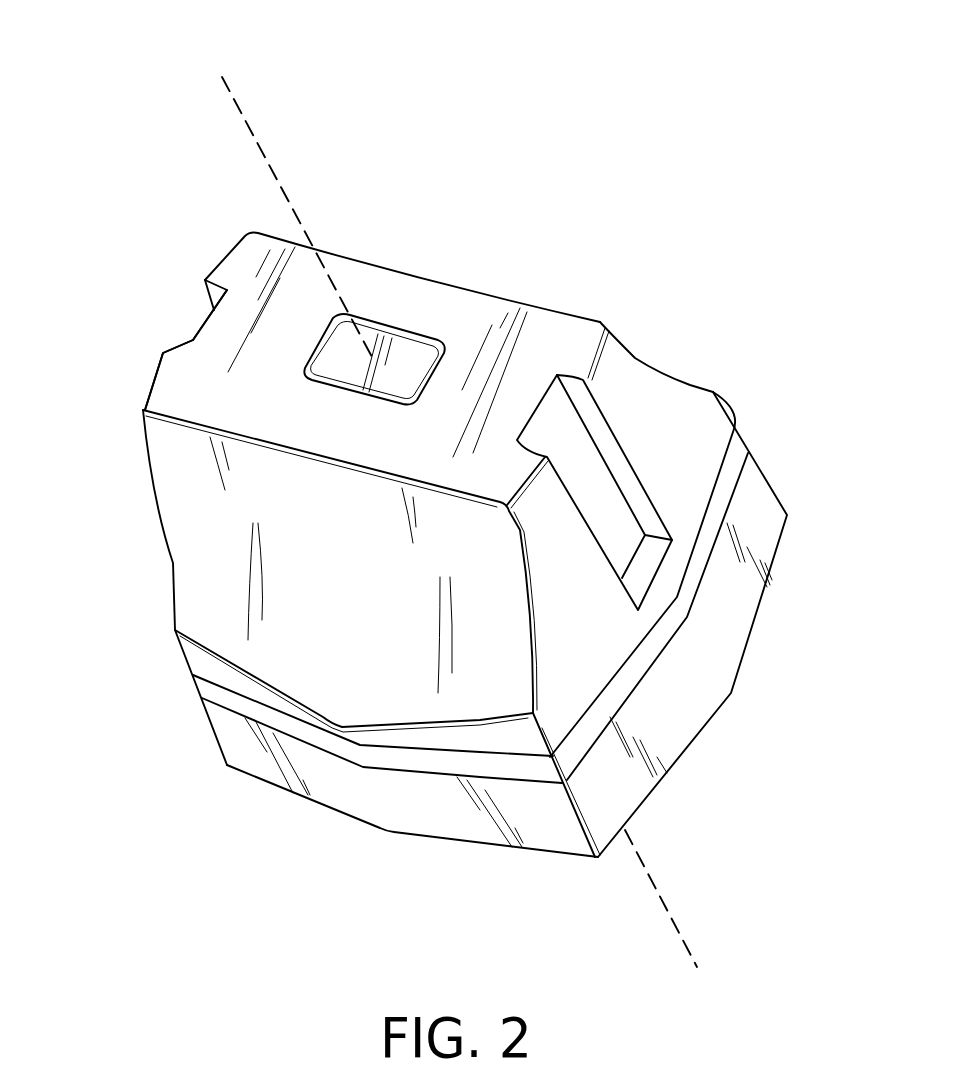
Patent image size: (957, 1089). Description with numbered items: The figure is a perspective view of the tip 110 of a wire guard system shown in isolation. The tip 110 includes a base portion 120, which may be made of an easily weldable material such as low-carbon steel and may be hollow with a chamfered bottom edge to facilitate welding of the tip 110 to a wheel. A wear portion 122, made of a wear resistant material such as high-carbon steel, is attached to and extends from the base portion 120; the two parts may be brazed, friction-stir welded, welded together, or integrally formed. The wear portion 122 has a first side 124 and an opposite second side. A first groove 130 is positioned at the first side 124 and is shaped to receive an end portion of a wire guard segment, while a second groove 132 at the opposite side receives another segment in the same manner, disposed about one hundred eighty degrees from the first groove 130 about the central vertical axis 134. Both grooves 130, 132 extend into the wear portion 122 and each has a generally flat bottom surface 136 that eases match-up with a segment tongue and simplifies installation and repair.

The tip 110 is at (205, 160).
The base portion 120 is at (767, 482).
The wear portion 122 is at (213, 266).
The first side 124 is at (563, 629).
The first groove 130 is at (633, 455).
The second groove 132 is at (200, 333).
The central vertical axis 134 is at (230, 89).
The generally flat bottom surface 136 is at (193, 340).